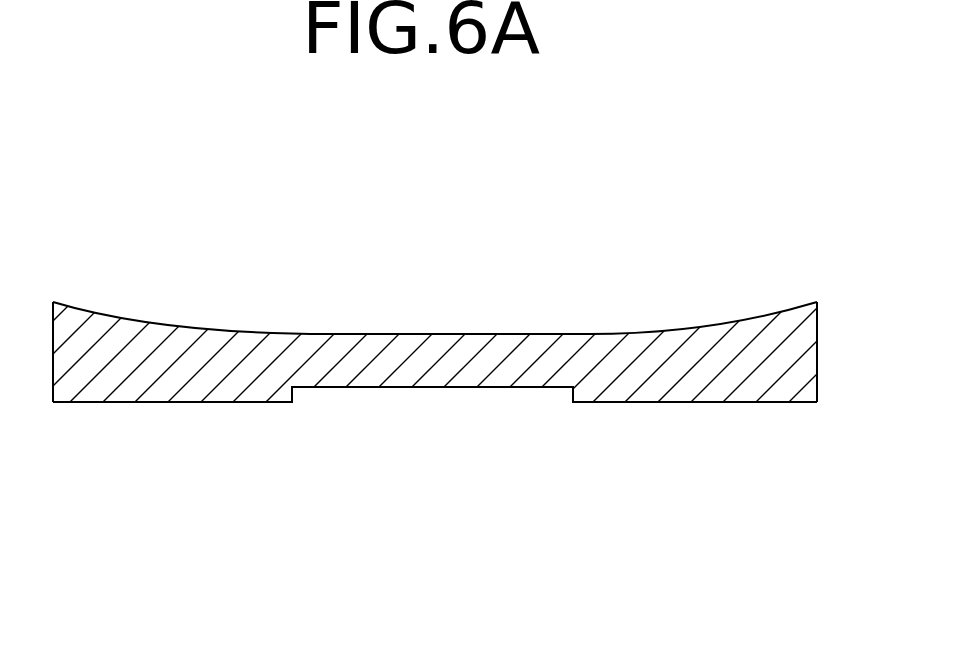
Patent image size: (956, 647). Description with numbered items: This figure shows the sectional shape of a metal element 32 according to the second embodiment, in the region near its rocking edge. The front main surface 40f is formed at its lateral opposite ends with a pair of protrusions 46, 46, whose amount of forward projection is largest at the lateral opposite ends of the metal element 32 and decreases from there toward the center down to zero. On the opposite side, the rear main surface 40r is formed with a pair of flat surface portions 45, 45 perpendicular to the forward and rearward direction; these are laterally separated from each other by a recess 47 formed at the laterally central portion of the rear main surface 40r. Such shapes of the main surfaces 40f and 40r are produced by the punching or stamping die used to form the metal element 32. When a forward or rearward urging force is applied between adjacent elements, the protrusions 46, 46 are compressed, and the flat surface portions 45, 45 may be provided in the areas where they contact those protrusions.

The metal element 32 is at (555, 273).
The front main surface 40f is at (320, 326).
The rear main surface 40r is at (280, 407).
The flat surface portion 45 is at (112, 402).
The protrusion 46 is at (85, 315).
The recess 47 is at (463, 387).